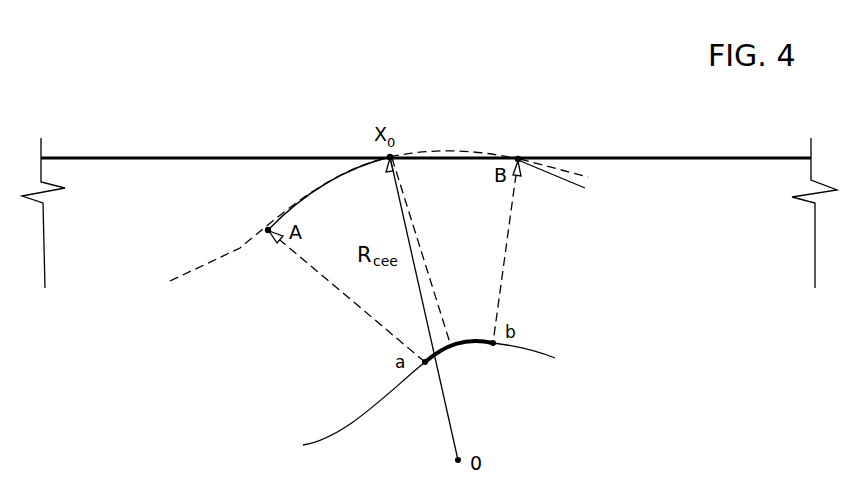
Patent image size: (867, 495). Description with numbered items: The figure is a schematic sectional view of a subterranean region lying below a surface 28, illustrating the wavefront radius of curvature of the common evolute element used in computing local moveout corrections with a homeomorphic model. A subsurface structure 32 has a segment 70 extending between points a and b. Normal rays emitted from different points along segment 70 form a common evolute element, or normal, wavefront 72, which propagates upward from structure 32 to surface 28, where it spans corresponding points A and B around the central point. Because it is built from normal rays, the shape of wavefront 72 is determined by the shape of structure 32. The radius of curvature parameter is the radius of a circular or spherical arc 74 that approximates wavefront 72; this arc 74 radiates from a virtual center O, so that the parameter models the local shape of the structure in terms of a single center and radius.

The surface 28 is at (635, 158).
The structure 32 is at (537, 358).
The segment 70 is at (467, 345).
The CEE wavefront 72 is at (203, 272).
The circular arc 74 is at (560, 180).